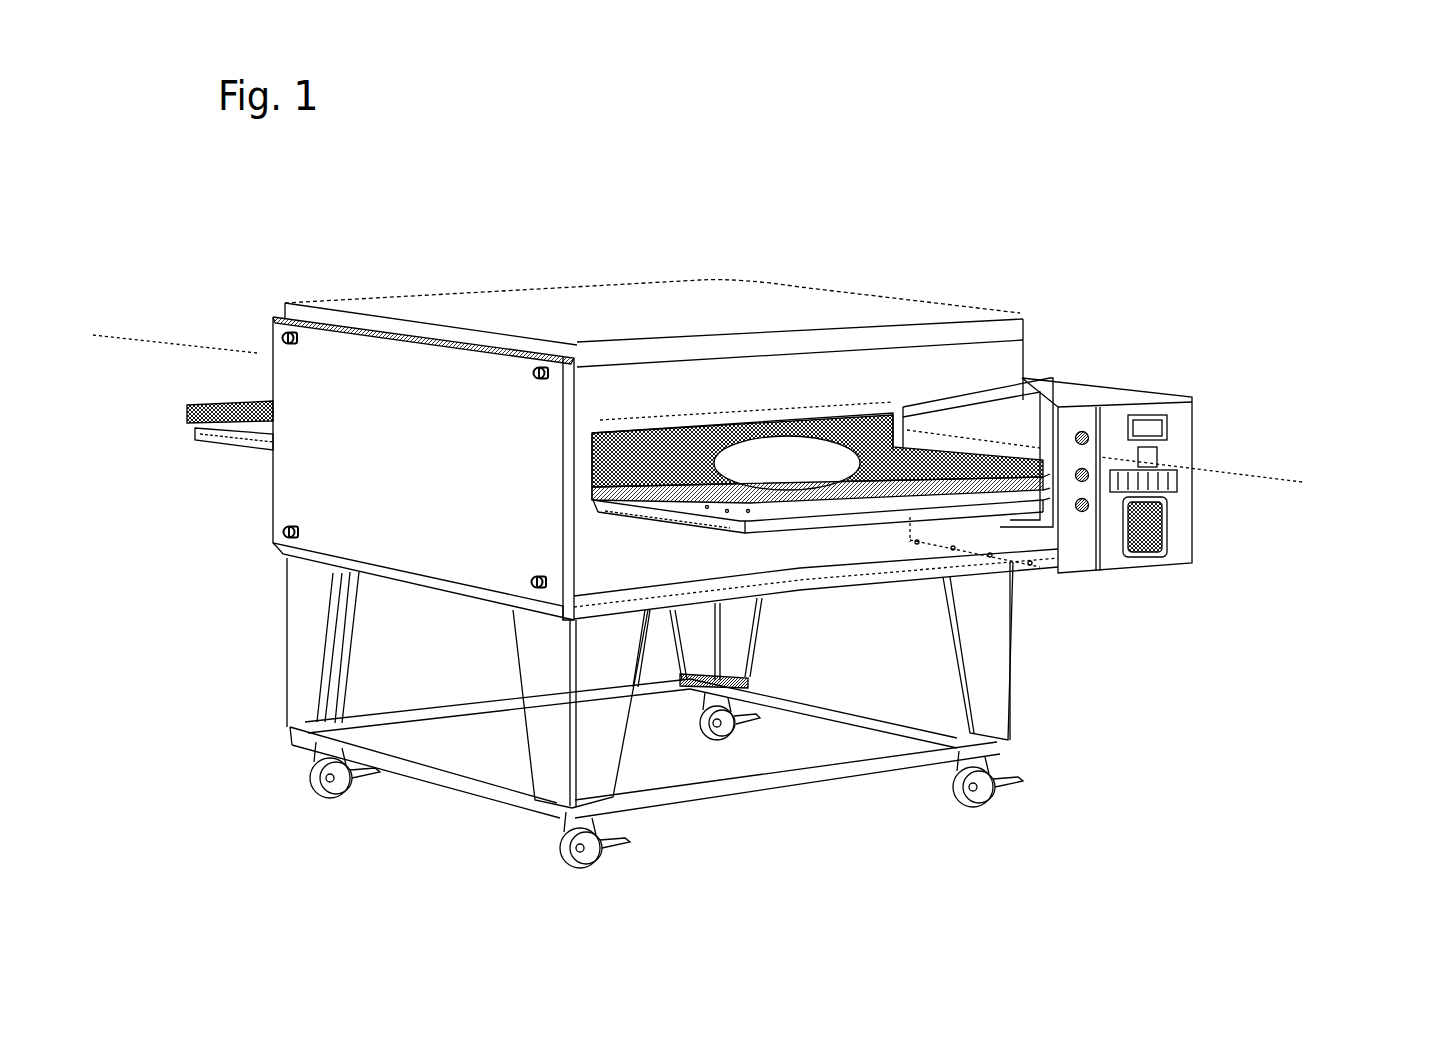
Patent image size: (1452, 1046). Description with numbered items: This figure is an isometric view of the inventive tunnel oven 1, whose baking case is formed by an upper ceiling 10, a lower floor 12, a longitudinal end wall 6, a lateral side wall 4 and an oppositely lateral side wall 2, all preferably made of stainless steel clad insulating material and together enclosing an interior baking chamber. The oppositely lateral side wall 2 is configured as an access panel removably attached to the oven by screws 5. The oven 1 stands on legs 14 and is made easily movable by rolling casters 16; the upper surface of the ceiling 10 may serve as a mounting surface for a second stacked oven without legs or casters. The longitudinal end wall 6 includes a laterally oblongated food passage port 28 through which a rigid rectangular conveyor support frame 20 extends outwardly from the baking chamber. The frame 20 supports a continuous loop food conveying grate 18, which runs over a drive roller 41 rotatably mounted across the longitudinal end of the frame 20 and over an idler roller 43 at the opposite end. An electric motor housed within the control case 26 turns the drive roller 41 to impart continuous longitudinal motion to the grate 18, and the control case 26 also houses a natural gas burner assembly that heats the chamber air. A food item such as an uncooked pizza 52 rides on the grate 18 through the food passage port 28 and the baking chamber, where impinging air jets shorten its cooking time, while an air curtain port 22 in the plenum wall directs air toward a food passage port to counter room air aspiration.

The tunnel oven 1 is at (600, 250).
The oppositely lateral side wall 2 is at (313, 485).
The lateral side wall 4 is at (93, 334).
The screws 5 is at (530, 583).
The longitudinal end wall 6 is at (900, 372).
The upper ceiling 10 is at (735, 307).
The lower floor 12 is at (860, 572).
The legs 14 is at (600, 720).
The rolling casters 16 is at (995, 803).
The continuous loop food conveying grate 18 is at (545, 392).
The rigid rectangular conveyor support frame 20 is at (793, 507).
The air curtain port 22 is at (1000, 372).
The control case 26 is at (1115, 573).
The food passage port 28 is at (850, 427).
The drive roller 41 is at (927, 490).
The idler roller 43 is at (243, 403).
The uncooked pizza 52 is at (782, 455).